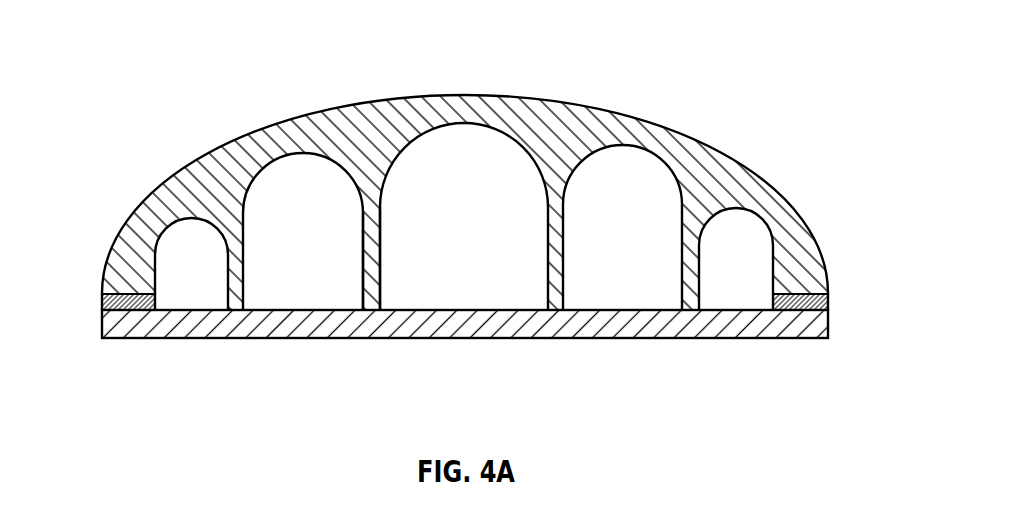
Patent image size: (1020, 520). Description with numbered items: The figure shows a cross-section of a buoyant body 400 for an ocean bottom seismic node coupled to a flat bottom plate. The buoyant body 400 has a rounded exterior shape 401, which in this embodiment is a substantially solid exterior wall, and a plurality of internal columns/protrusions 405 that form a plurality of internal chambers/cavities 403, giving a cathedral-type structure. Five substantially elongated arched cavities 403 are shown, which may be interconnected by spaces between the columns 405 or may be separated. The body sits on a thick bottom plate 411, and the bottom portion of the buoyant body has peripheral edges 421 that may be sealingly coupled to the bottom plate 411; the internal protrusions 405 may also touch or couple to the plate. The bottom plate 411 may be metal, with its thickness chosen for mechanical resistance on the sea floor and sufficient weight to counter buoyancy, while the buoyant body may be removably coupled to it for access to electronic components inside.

The buoyant body 400 is at (462, 204).
The rounded exterior shape 401 is at (522, 110).
The internal chambers/cavities 403 is at (285, 190).
The internal columns/protrusions 405 is at (369, 192).
The thick bottom plate 411 is at (333, 340).
The peripheral edges 421 is at (102, 298).